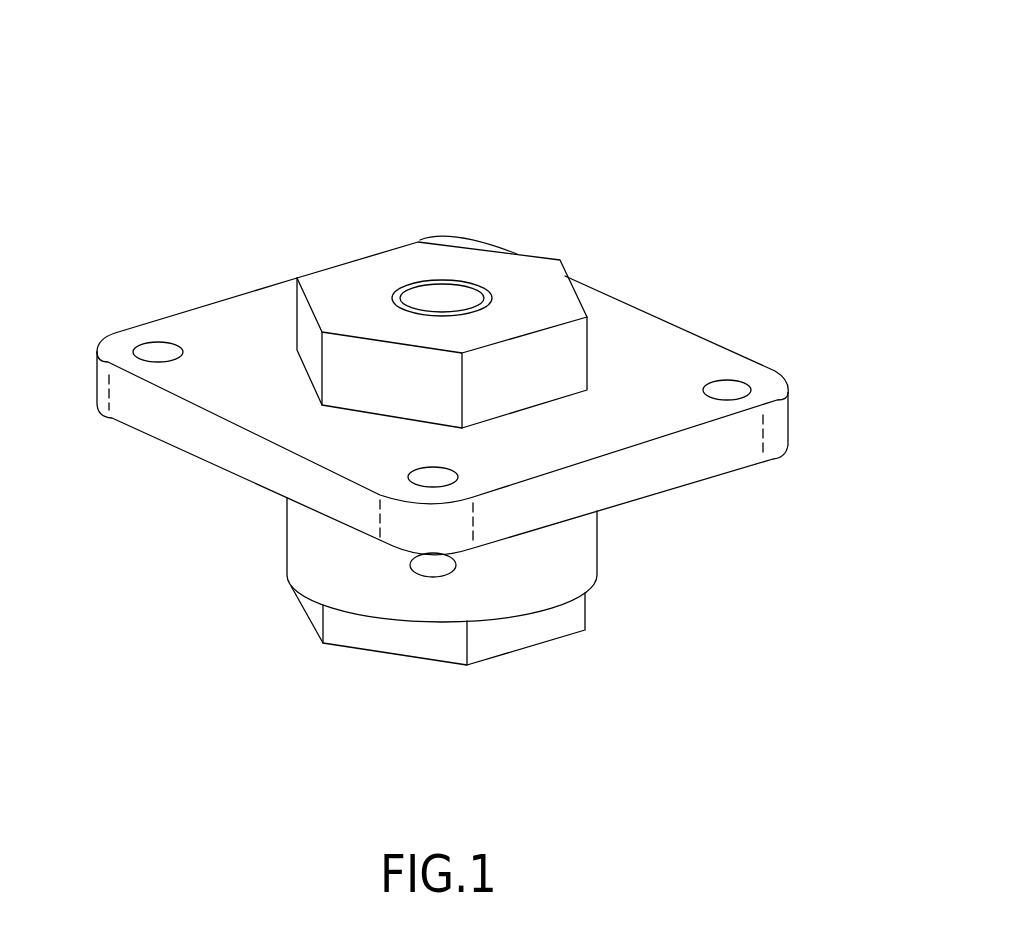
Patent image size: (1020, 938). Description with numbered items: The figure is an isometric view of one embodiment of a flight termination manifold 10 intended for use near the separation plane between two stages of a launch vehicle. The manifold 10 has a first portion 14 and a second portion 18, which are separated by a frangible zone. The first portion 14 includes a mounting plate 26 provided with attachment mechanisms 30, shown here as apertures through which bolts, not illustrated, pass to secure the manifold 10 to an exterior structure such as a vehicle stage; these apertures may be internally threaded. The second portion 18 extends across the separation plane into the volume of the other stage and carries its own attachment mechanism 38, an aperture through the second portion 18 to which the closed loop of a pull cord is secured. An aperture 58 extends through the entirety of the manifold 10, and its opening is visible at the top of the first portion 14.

The flight termination manifold 10 is at (433, 335).
The first portion 14 is at (625, 326).
The second portion 18 is at (633, 564).
The mounting plate 26 is at (416, 416).
The attachment mechanisms 30 is at (151, 350).
The attachment mechanism 38 is at (437, 556).
The aperture 58 is at (438, 292).